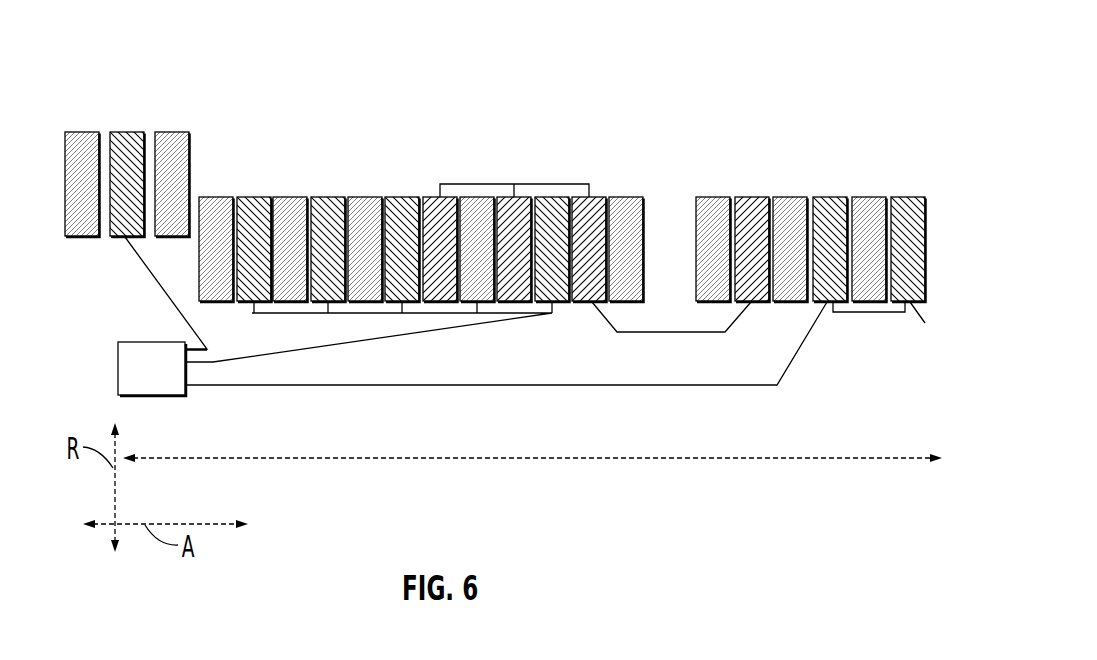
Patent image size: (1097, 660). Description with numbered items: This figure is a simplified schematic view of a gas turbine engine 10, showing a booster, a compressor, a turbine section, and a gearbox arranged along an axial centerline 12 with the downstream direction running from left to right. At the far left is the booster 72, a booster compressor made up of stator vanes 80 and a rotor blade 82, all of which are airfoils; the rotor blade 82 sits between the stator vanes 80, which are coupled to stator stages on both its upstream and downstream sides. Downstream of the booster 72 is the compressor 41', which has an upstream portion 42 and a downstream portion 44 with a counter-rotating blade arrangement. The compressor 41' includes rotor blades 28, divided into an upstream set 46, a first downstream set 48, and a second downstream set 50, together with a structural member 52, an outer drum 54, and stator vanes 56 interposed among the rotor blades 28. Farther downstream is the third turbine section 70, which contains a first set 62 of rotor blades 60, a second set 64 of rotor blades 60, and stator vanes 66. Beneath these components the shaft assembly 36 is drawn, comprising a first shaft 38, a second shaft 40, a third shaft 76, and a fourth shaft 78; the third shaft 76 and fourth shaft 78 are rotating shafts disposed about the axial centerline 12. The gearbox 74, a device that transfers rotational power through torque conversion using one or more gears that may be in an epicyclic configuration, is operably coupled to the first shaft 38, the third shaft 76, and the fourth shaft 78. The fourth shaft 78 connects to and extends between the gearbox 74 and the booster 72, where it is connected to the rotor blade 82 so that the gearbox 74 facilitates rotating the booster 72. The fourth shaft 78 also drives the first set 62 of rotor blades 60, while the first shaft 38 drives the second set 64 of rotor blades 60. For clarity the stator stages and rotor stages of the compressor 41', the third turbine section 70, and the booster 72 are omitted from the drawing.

The gas turbine engine 10 is at (716, 110).
The axial centerline 12 is at (277, 457).
The rotor blades 28 is at (422, 249).
The shaft assembly 36 is at (654, 376).
The first shaft 38 is at (375, 314).
The second shaft 40 is at (640, 334).
The compressor 41' is at (420, 61).
The upstream portion 42 is at (197, 150).
The downstream portion 44 is at (428, 150).
The upstream set 46 is at (328, 271).
The first downstream set 48 is at (515, 271).
The second downstream set 50 is at (477, 271).
The structural member 52 is at (589, 271).
The outer drum 54 is at (543, 183).
The stator vanes 56 is at (421, 249).
The rotor blades 60 is at (830, 249).
The first set 62 is at (869, 271).
The second set 64 is at (752, 271).
The stator vanes 66 is at (791, 249).
The third turbine section 70 is at (902, 170).
The booster 72 is at (65, 118).
The gearbox 74 is at (118, 380).
The third shaft 76 is at (715, 386).
The fourth shaft 78 is at (150, 273).
The stator vanes 80 is at (127, 184).
The rotor blade 82 is at (127, 184).